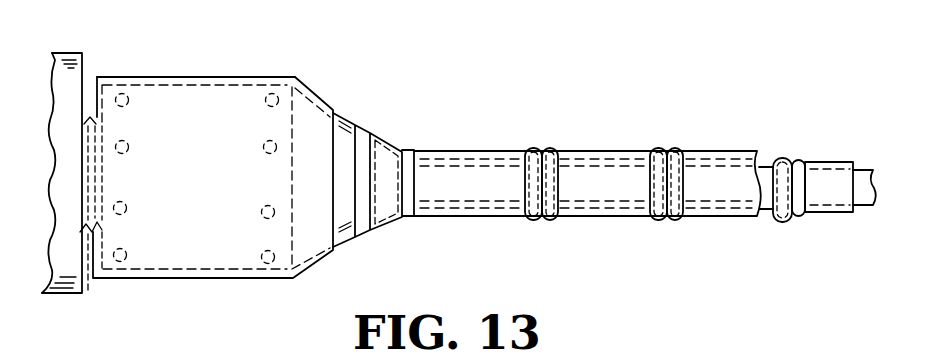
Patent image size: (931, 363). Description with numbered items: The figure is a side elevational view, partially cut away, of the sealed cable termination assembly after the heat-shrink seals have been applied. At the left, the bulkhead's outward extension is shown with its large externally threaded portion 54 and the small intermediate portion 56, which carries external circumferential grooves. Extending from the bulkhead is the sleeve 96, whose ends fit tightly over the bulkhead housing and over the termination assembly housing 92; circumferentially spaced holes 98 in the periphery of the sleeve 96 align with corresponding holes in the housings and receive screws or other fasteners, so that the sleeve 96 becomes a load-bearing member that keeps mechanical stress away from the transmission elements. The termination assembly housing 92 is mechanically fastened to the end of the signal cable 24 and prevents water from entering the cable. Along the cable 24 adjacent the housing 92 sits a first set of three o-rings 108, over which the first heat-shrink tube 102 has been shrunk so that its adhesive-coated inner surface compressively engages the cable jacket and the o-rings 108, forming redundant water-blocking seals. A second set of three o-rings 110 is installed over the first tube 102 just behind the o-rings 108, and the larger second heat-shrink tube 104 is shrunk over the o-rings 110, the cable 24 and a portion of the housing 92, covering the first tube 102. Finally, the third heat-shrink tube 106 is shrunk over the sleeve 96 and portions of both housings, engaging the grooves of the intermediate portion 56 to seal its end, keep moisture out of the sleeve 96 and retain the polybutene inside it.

The signal cable 24 is at (862, 208).
The large externally threaded portion 54 is at (83, 71).
The small intermediate portion 56 is at (90, 295).
The termination assembly housing 92 is at (351, 139).
The sleeve 96 is at (213, 97).
The holes 98 is at (132, 207).
The first heat-shrink tube 102 is at (832, 162).
The second heat-shrink tube 104 is at (607, 150).
The third heat-shrink tube 106 is at (263, 76).
The first set of o-rings 108 is at (525, 180).
The second set of o-rings 110 is at (556, 222).